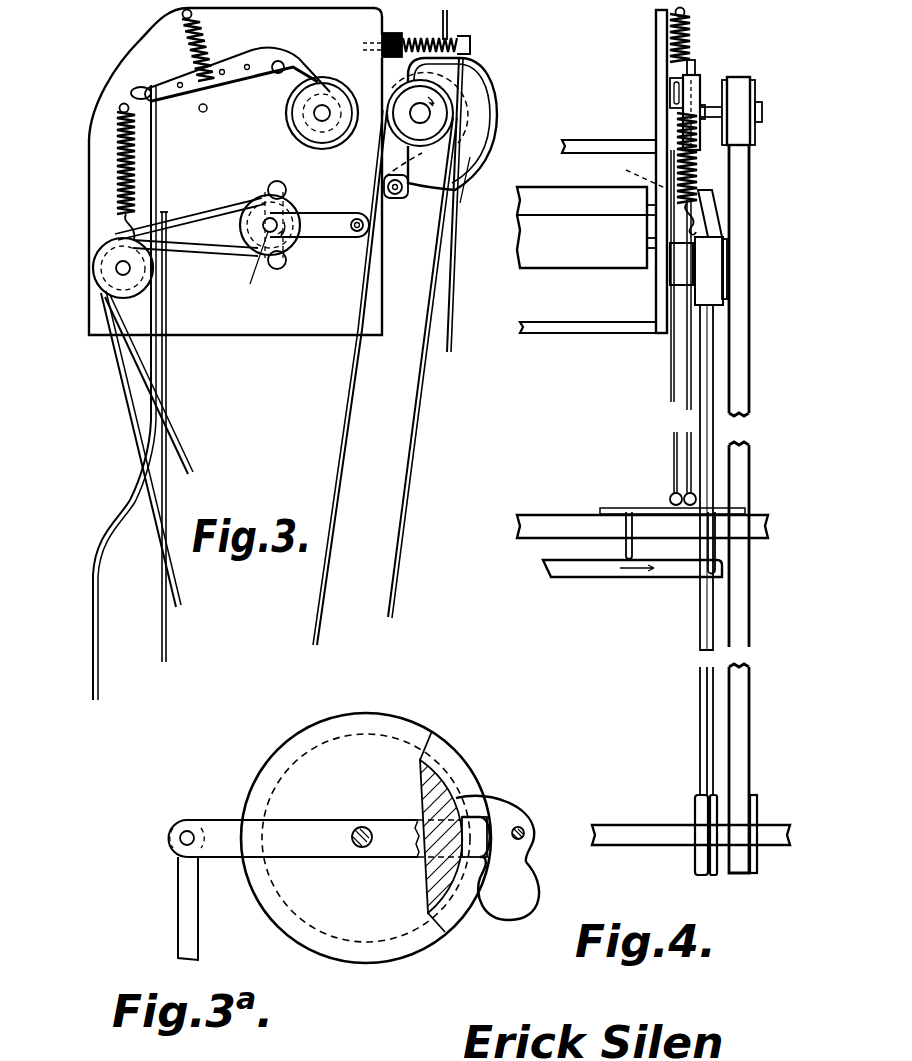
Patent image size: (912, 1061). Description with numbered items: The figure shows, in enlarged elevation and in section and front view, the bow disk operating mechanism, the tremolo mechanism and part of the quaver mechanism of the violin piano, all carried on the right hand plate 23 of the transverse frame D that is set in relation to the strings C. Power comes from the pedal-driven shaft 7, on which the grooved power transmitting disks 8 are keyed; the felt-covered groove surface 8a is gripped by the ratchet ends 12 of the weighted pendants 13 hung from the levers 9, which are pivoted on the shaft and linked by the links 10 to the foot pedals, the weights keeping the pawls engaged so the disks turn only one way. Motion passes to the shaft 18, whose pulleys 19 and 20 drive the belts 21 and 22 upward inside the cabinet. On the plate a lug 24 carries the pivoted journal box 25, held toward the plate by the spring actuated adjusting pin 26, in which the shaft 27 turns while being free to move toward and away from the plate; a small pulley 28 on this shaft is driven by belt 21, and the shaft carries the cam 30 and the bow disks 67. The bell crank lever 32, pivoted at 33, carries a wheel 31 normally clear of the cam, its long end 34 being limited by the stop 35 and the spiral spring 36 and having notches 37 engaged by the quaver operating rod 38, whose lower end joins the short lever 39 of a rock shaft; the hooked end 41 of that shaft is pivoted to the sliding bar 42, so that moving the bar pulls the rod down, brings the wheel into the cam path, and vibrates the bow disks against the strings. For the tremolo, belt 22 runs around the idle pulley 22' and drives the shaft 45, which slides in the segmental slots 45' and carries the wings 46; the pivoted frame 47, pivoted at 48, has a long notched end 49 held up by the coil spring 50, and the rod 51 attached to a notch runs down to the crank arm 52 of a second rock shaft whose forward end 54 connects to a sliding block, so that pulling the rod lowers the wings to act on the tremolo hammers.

In FIG. 3A, the shaft 7 is at (359, 867).
In FIG. 3A, the power transmitting disk 8 is at (366, 857).
In FIG. 3A, the grooved spindle portion 8a is at (440, 848).
In FIG. 3A, the lever 9 is at (328, 858).
In FIG. 3A, the link 10 is at (158, 908).
In FIG. 3A, the ratchet end 12 is at (495, 809).
In FIG. 3A, the weighted pendant 13 is at (529, 888).
In FIG. 4, the shaft 18 is at (691, 814).
In FIG. 4, the pulley 19 is at (680, 882).
In FIG. 4, the pulley 20 is at (777, 882).
In FIG. 3, the belt 21 is at (391, 377).
In FIG. 4, the belt 21 is at (765, 509).
In FIG. 3, the belt 22 is at (166, 402).
In FIG. 4, the belt 22 is at (748, 550).
In FIG. 3, the idle pulley 22' is at (101, 284).
In FIG. 4, the idle pulley 22' is at (754, 266).
In FIG. 3, the plate 23 is at (235, 203).
In FIG. 3, the lug 24 is at (406, 210).
In FIG. 3, the journal box 25 is at (400, 126).
In FIG. 3, the spring actuated adjusting pin 26 is at (443, 33).
In FIG. 3, the shaft 27 is at (470, 113).
In FIG. 4, the shaft 27 is at (757, 111).
In FIG. 3, the small pulley 28 is at (463, 120).
In FIG. 4, the small pulley 28 is at (783, 122).
In FIG. 3, the cam 30 is at (475, 117).
In FIG. 4, the cam 30 is at (709, 70).
In FIG. 3, the wheel 31 is at (299, 113).
In FIG. 4, the wheel 31 is at (735, 94).
In FIG. 3, the bell crank lever 32 is at (247, 65).
In FIG. 3, the pivot 33 is at (243, 50).
In FIG. 3, the long end 34 is at (235, 101).
In FIG. 3, the stop 35 is at (226, 100).
In FIG. 3, the spiral spring 36 is at (217, 45).
In FIG. 4, the spiral spring 36 is at (655, 35).
In FIG. 3, the notch 37 is at (154, 71).
In FIG. 3, the quaver operating rod 38 is at (153, 395).
In FIG. 4, the quaver operating rod 38 is at (650, 322).
In FIG. 4, the short lever 39 is at (738, 486).
In FIG. 4, the hooked end 41 is at (661, 544).
In FIG. 4, the sliding bar 42 is at (632, 591).
In FIG. 3, the shaft 45 is at (270, 254).
In FIG. 3, the segmental slot 45' is at (265, 213).
In FIG. 4, the segmental slot 45' is at (629, 170).
In FIG. 4, the wing 46 is at (582, 245).
In FIG. 3, the pivoted frame 47 is at (319, 197).
In FIG. 3, the pivot 48 is at (340, 249).
In FIG. 3, the long notched end 49 is at (149, 250).
In FIG. 4, the long notched end 49 is at (646, 251).
In FIG. 3, the coil spring 50 is at (95, 172).
In FIG. 4, the coil spring 50 is at (738, 174).
In FIG. 3, the rod 51 is at (197, 437).
In FIG. 4, the rod 51 is at (658, 347).
In FIG. 4, the crank arm 52 is at (672, 489).
In FIG. 4, the forward end 54 is at (645, 561).
In FIG. 3, the bow disk 67 is at (478, 186).
In FIG. 3, the strings C is at (466, 205).
In FIG. 4, the frame D is at (593, 189).